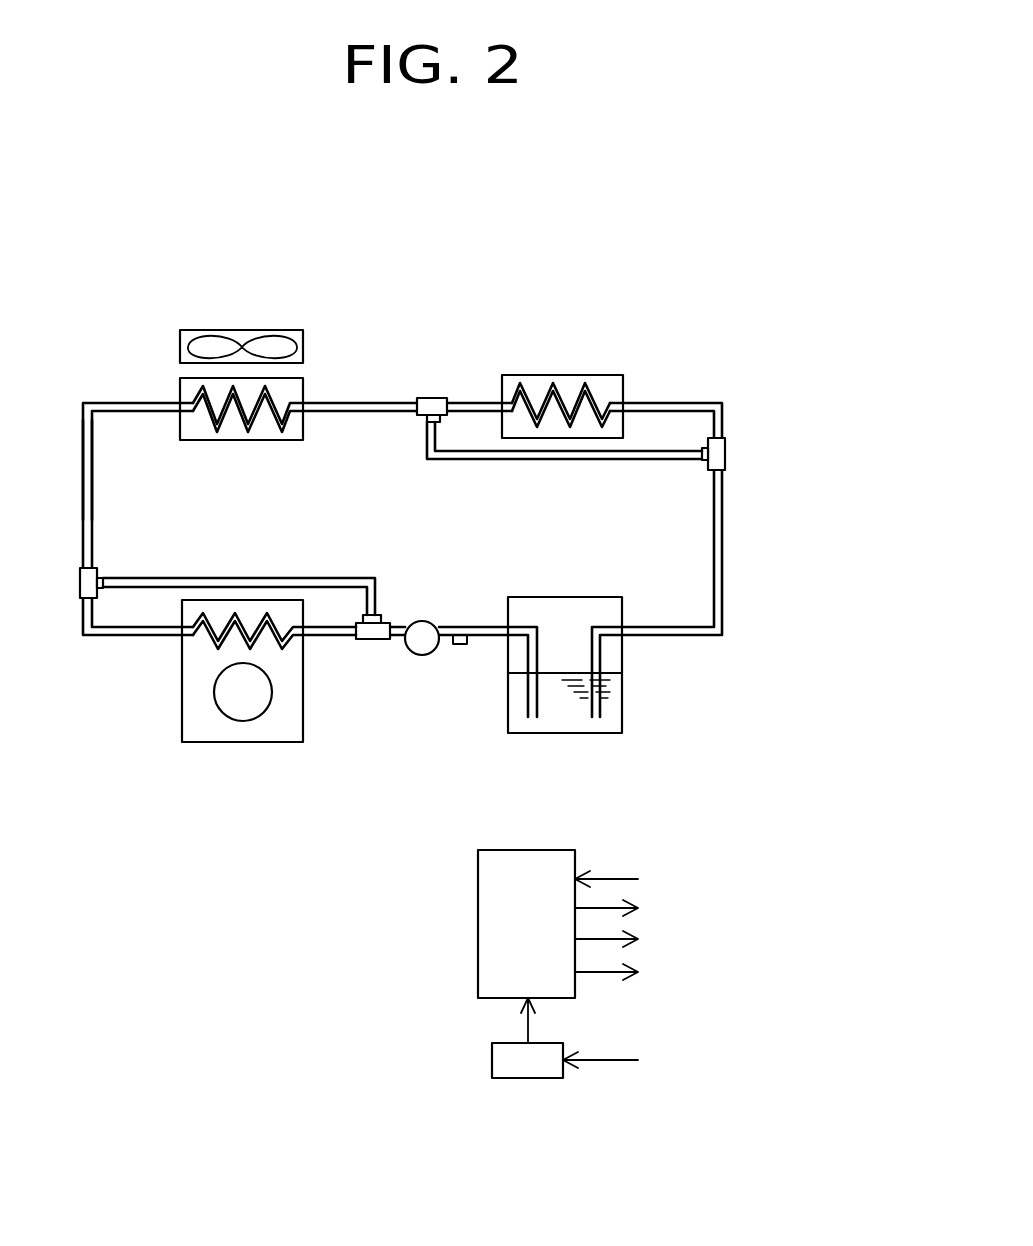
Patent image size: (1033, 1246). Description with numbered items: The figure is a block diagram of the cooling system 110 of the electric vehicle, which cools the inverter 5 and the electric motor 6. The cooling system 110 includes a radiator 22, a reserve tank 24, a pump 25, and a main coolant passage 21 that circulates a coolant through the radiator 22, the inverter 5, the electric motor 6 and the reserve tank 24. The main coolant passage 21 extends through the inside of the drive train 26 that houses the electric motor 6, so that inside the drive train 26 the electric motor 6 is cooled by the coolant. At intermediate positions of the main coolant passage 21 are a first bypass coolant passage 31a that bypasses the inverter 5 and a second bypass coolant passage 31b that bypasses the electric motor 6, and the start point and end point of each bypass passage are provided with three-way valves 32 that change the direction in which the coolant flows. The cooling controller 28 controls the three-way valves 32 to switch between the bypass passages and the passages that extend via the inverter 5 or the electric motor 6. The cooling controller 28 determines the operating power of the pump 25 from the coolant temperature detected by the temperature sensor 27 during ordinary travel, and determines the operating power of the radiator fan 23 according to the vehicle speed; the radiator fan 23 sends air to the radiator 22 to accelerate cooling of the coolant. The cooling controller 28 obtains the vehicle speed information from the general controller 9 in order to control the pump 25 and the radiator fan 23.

The cooling system 110 is at (120, 276).
The main coolant passage 21 is at (83, 428).
The radiator 22 is at (180, 392).
The radiator fan 23 is at (265, 330).
The inverter 5 is at (562, 375).
The three-way valve 32 is at (421, 422).
The first bypass coolant passage 31a is at (618, 460).
The second bypass coolant passage 31b is at (288, 578).
The drive train 26 is at (182, 688).
The electric motor 6 is at (243, 722).
The pump 25 is at (420, 620).
The temperature sensor 27 is at (458, 645).
The reserve tank 24 is at (565, 735).
The cooling controller 28 is at (478, 922).
The general controller 9 is at (492, 1063).